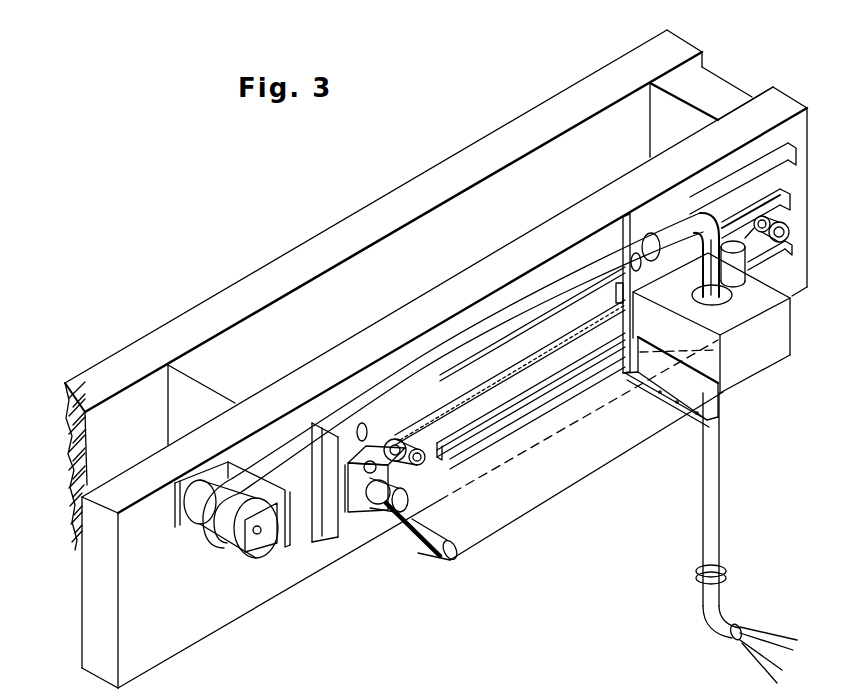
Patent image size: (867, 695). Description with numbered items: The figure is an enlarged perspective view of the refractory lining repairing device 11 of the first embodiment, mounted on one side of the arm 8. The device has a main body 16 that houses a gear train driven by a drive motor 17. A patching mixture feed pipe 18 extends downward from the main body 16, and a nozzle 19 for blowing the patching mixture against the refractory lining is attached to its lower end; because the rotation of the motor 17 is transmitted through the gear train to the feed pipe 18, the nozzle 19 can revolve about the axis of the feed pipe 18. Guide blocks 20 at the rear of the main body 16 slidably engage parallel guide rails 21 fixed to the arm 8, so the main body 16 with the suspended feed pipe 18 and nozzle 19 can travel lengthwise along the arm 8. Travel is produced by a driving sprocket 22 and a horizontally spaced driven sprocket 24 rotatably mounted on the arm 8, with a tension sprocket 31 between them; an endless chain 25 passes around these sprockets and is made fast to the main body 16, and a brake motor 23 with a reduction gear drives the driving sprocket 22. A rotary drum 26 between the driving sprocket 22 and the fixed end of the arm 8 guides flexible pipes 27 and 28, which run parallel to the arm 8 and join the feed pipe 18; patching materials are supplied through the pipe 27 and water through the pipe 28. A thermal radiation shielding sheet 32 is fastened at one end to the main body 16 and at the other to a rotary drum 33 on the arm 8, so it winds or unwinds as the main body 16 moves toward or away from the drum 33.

The arm 8 is at (436, 359).
The refractory lining repairing device 11 is at (743, 310).
The main body 16 is at (749, 366).
The drive motor 17 is at (747, 266).
The patching mixture feed pipe 18 is at (713, 505).
The nozzle 19 is at (713, 585).
The guide blocks 20 is at (616, 373).
The guide rails 21 is at (498, 363).
The driving sprocket 22 is at (358, 487).
The brake motor 23 is at (388, 520).
The driven sprocket 24 is at (790, 236).
The endless chain 25 is at (463, 447).
The rotary drum 26 is at (247, 557).
The flexible pipe 27 is at (300, 440).
The flexible pipe 28 is at (353, 440).
The tension sprocket 31 is at (387, 508).
The thermal radiation shielding sheet 32 is at (577, 457).
The rotary drum 33 is at (450, 555).